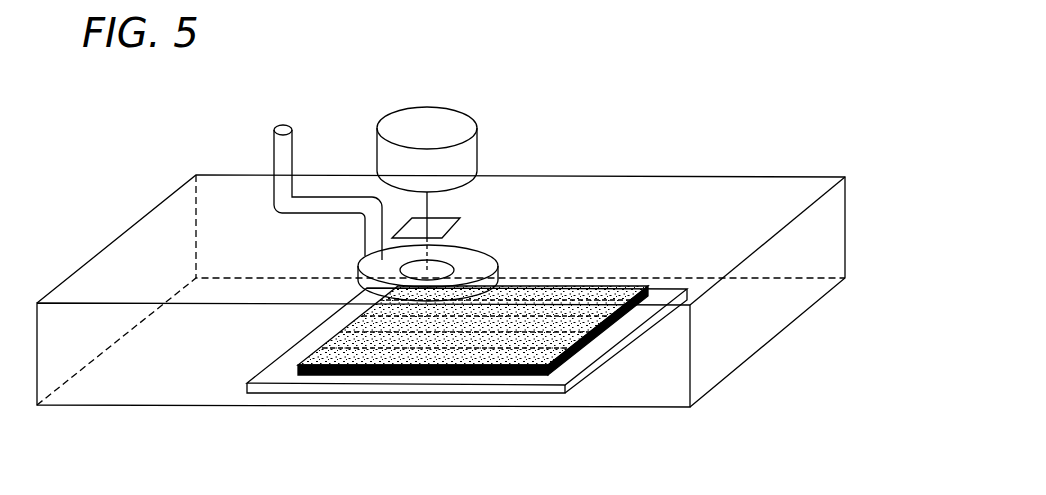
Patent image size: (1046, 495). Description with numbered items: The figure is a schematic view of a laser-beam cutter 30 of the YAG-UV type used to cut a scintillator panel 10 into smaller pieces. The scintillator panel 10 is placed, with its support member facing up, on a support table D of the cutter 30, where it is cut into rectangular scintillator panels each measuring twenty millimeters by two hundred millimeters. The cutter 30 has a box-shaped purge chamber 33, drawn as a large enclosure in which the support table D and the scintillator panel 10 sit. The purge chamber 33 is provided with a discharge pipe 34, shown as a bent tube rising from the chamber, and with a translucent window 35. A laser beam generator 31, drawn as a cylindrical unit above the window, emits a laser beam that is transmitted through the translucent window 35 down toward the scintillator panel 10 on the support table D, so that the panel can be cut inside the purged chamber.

The cutter 30 is at (604, 108).
The laser beam generator 31 is at (477, 149).
The purge chamber 33 is at (167, 190).
The discharge pipe 34 is at (292, 137).
The translucent window 35 is at (460, 218).
The scintillator panel 10 is at (332, 377).
The support table D is at (397, 394).